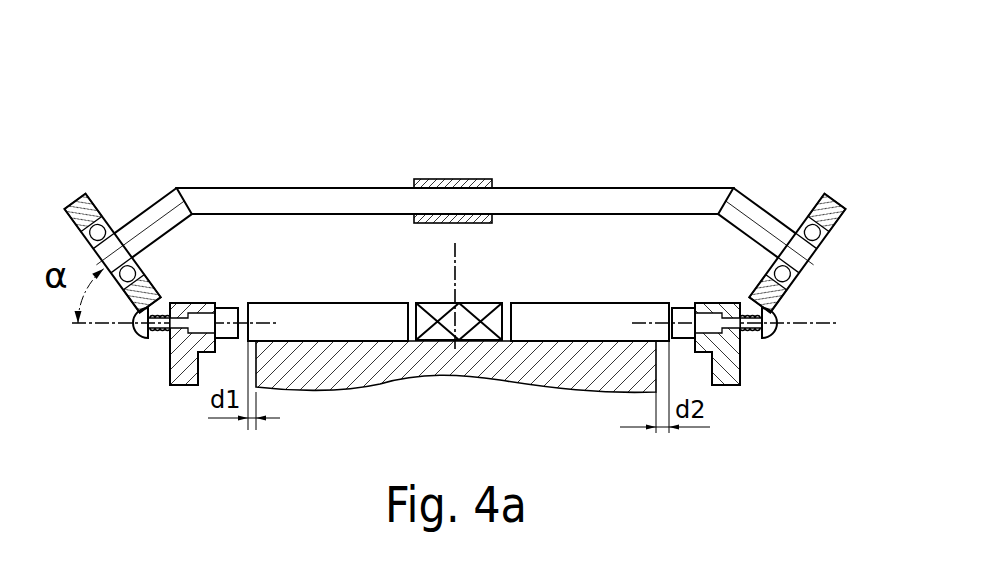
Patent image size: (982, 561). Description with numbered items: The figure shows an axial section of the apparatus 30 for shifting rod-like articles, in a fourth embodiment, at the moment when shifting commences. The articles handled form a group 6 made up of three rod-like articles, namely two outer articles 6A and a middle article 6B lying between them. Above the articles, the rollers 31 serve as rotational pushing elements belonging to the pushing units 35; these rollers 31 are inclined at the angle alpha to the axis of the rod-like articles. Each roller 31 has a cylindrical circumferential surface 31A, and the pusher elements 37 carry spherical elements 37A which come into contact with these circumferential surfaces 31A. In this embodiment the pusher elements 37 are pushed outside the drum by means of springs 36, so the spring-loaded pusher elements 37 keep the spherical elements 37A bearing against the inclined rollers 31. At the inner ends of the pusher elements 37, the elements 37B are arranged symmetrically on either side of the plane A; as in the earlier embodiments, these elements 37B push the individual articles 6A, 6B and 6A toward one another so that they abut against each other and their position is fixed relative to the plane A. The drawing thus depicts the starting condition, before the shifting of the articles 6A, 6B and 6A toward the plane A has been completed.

The apparatus 30 is at (355, 135).
The rollers 31 is at (102, 207).
The cylindrical circumferential surfaces 31A is at (77, 193).
The pushing units 35 is at (83, 163).
The group 6 is at (393, 270).
The rod-like articles 6A is at (367, 318).
The rod-like article 6B is at (472, 313).
The plane A is at (455, 243).
The springs 36 is at (163, 332).
The pusher elements 37 is at (142, 352).
The spherical elements 37A is at (143, 337).
The elements 37B is at (228, 317).